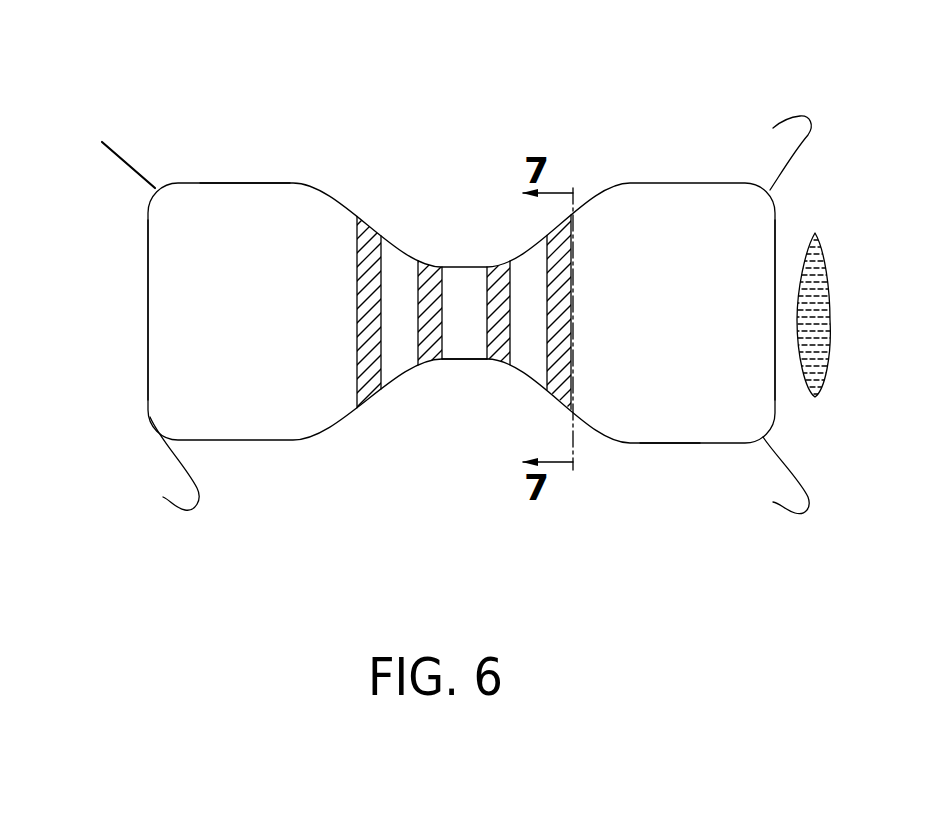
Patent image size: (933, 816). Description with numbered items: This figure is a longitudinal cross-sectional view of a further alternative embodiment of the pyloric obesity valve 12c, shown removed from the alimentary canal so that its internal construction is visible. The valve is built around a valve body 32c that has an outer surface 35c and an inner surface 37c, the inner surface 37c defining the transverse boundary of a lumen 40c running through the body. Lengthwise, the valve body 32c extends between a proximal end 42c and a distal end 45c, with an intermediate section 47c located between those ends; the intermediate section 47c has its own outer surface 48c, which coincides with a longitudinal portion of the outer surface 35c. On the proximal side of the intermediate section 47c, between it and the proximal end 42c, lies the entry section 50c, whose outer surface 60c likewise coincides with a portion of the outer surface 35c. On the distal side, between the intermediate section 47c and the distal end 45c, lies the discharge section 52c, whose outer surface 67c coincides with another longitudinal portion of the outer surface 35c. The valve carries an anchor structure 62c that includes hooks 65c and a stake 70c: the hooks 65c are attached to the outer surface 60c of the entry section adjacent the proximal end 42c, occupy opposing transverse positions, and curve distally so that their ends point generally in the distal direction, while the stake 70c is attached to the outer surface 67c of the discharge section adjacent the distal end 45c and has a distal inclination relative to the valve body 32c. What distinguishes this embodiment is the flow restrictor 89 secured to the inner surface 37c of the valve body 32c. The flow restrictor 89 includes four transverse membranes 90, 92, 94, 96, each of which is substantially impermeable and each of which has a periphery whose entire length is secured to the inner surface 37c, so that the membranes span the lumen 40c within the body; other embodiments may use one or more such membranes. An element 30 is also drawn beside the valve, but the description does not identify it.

The pyloric obesity valve 12c is at (633, 177).
The fluid deposit region 30 is at (823, 332).
The valve body 32c is at (654, 421).
The outer surface 35c is at (298, 175).
The inner surface 37c is at (212, 373).
The lumen 40c is at (635, 348).
The proximal end 42c is at (775, 220).
The distal end 45c is at (148, 270).
The intermediate section 47c is at (476, 368).
The outer surface of intermediate section 48c is at (503, 362).
The entry section 50c is at (705, 306).
The discharge section 52c is at (233, 294).
The outer surface of entry section 60c is at (718, 445).
The anchor structure 62c is at (152, 170).
The hook 65c is at (203, 502).
The outer surface of discharge section 67c is at (245, 443).
The stake 70c is at (113, 148).
The flow restrictor 89 is at (343, 372).
The transverse membrane 90 is at (560, 275).
The transverse membrane 92 is at (497, 275).
The transverse membrane 94 is at (428, 285).
The transverse membrane 96 is at (370, 240).